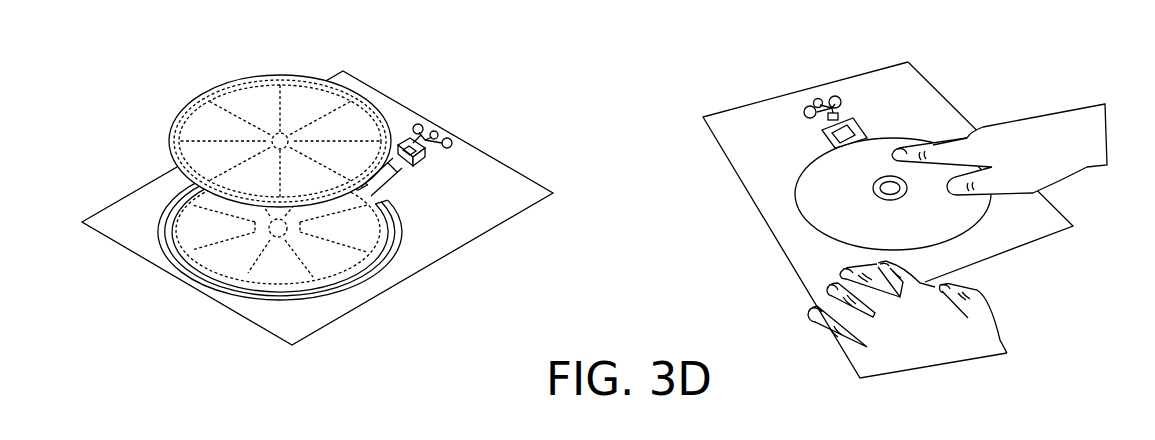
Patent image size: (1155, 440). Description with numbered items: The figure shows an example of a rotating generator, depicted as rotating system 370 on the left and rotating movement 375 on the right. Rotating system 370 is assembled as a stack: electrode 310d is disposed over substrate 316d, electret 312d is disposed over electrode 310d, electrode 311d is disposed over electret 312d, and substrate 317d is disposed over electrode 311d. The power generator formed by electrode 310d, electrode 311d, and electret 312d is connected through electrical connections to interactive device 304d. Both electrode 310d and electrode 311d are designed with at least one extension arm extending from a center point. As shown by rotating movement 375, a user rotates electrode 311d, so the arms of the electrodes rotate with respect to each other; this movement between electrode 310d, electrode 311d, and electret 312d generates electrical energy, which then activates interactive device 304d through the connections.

The rotating system 370 is at (436, 56).
The electrode 311d is at (259, 96).
The substrate 317d is at (166, 152).
The interactive device 304d is at (442, 129).
The substrate 316d is at (467, 231).
The electret 312d is at (188, 232).
The electrode 310d is at (336, 266).
The rotating movement 375 is at (986, 54).